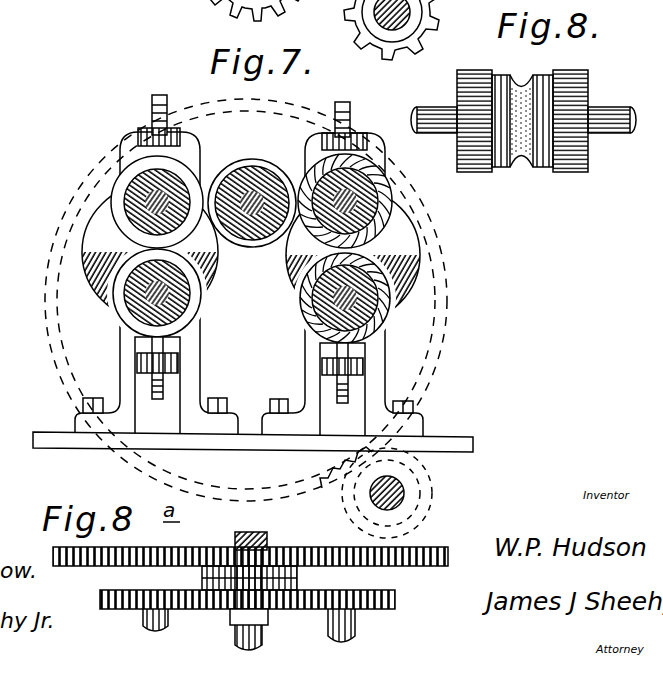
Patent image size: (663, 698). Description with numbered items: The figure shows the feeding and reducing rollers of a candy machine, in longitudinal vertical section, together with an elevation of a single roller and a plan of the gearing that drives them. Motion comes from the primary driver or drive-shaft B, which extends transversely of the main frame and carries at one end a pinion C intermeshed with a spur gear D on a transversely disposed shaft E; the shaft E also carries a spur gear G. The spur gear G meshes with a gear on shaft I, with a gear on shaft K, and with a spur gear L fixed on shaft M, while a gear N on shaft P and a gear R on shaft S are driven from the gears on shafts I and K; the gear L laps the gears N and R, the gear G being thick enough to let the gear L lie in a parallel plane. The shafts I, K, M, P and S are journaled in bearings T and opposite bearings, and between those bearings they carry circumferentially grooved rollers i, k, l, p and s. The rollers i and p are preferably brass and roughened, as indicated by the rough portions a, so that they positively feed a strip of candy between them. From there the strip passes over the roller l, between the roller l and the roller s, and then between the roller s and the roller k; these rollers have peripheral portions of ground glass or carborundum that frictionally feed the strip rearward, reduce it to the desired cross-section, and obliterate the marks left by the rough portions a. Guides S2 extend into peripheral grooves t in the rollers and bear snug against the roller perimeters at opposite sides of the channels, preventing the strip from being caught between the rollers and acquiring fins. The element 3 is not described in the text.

In FIG. 7, the shaft S is at (130, 197).
In FIG. 8, the shaft S is at (628, 133).
In FIG. 7, the roller s is at (150, 215).
In FIG. 8, the roller s is at (588, 82).
In FIG. 7, the guides S2 is at (95, 247).
In FIG. 7, the shaft M is at (258, 170).
In FIG. 8A, the shaft M is at (240, 640).
In FIG. 7, the roller l is at (263, 213).
In FIG. 7, the shaft P is at (362, 175).
In FIG. 8A, the shaft P is at (355, 630).
In FIG. 7, the roller p is at (380, 187).
In FIG. 7, the shaft K is at (135, 300).
In FIG. 7, the roller k is at (178, 308).
In FIG. 7, the roller i is at (380, 308).
In FIG. 7, the rough portions a is at (405, 228).
In FIG. 7, the bearings T is at (187, 363).
In FIG. 7, the shaft I is at (310, 373).
In FIG. 7, the spur gear D is at (440, 345).
In FIG. 8A, the spur gear D is at (448, 559).
In FIG. 7, the primary driver or drive-shaft B is at (400, 490).
In FIG. 7, the pinion C is at (415, 523).
In FIG. 8, the peripheral grooves t is at (549, 182).
In FIG. 8A, the spur gear G is at (205, 585).
In FIG. 8A, the spur gear L is at (297, 578).
In FIG. 8A, the gear N is at (395, 602).
In FIG. 8A, the gear R is at (125, 607).
In FIG. 8A, the shaft stub 3 is at (150, 635).
In FIG. 8A, the shaft E is at (268, 620).